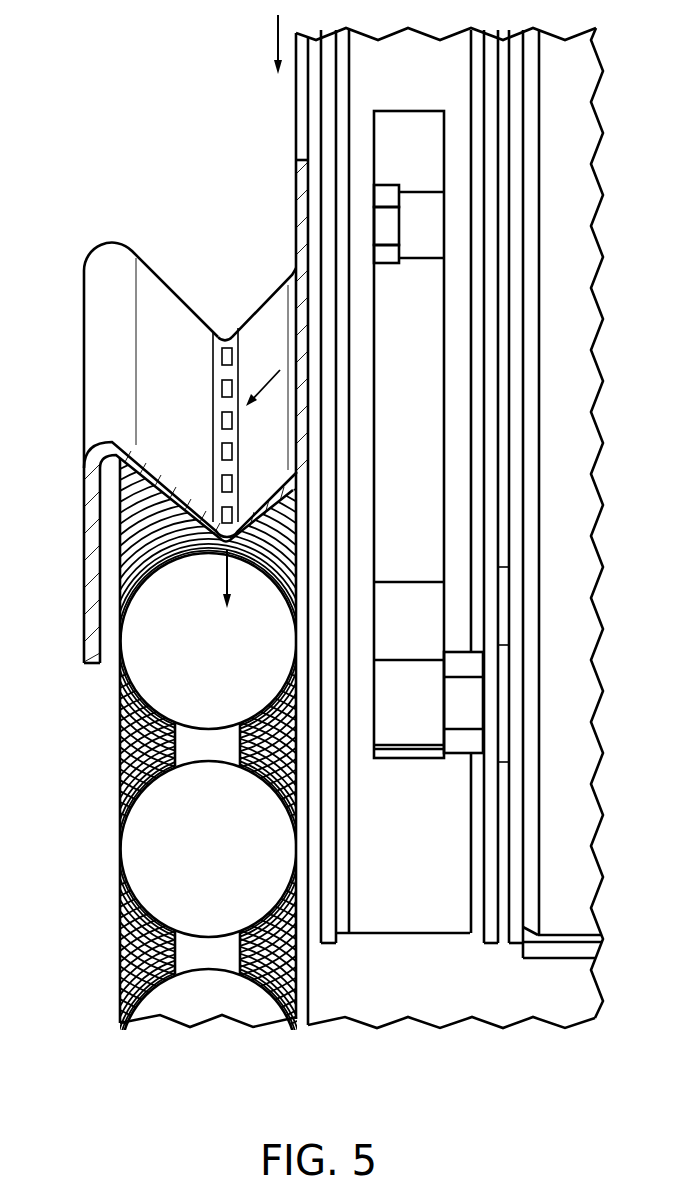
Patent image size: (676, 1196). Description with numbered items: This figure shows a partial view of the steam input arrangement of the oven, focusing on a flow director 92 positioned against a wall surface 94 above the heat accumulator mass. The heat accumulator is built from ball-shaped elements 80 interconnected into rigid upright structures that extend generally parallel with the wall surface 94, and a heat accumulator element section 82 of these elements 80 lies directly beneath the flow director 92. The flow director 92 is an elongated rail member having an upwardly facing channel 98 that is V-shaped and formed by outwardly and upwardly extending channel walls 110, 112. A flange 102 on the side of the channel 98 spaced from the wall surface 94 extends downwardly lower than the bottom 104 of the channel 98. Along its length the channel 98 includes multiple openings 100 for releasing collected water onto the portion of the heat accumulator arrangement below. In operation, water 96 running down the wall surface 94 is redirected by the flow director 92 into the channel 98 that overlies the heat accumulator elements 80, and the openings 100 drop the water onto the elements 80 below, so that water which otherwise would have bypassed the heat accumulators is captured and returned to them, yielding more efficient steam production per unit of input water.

The ball-shaped element 80 is at (137, 863).
The heat accumulator element section 82 is at (207, 744).
The flow director 92 is at (98, 290).
The wall surface 94 is at (307, 114).
The water 96 is at (277, 35).
The channel 98 is at (163, 297).
The opening 100 is at (222, 410).
The flange 102 is at (88, 607).
The bottom of the channel 104 is at (222, 550).
The channel wall 110 is at (152, 395).
The channel wall 112 is at (273, 298).